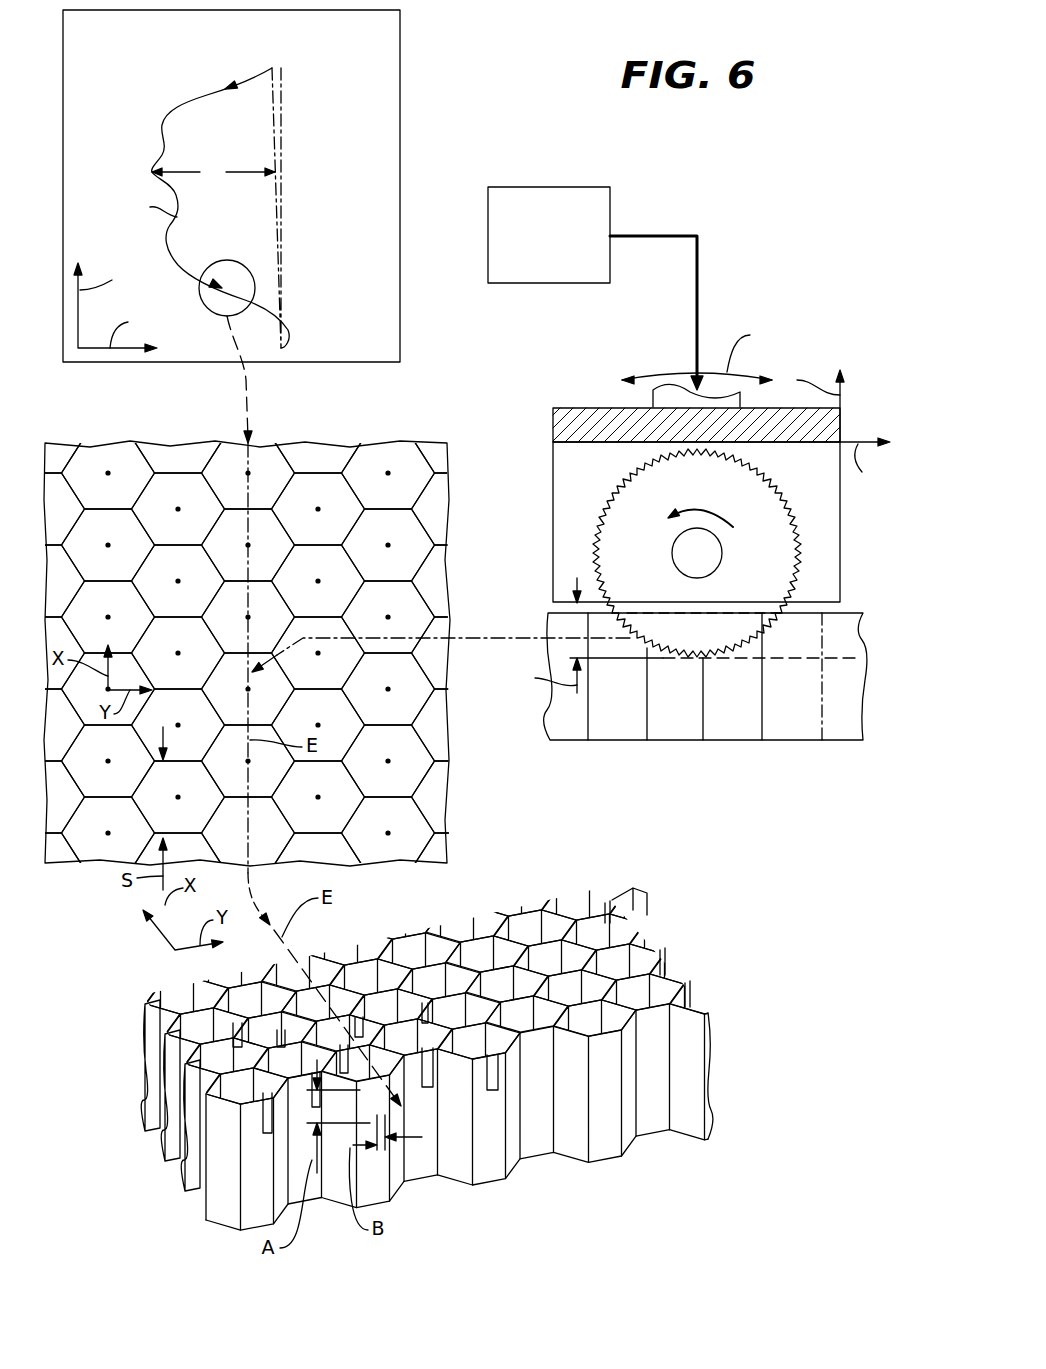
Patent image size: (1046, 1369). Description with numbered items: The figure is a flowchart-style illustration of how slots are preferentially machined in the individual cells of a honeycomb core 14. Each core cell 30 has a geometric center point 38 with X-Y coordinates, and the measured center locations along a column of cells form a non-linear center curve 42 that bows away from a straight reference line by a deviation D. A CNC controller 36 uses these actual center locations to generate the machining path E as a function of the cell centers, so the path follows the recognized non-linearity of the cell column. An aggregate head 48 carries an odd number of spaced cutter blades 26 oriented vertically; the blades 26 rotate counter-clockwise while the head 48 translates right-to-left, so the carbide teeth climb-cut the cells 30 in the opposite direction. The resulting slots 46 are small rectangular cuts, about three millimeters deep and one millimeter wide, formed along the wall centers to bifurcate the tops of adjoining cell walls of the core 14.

The honeycomb core 14 is at (47, 500).
The cutter blade 26 is at (788, 500).
The core cell 30 is at (98, 539).
The CNC controller 36 is at (521, 187).
The geometric center point 38 is at (387, 838).
The center curve 42 is at (207, 95).
The slot 46 is at (822, 628).
The aggregate head 48 is at (567, 479).